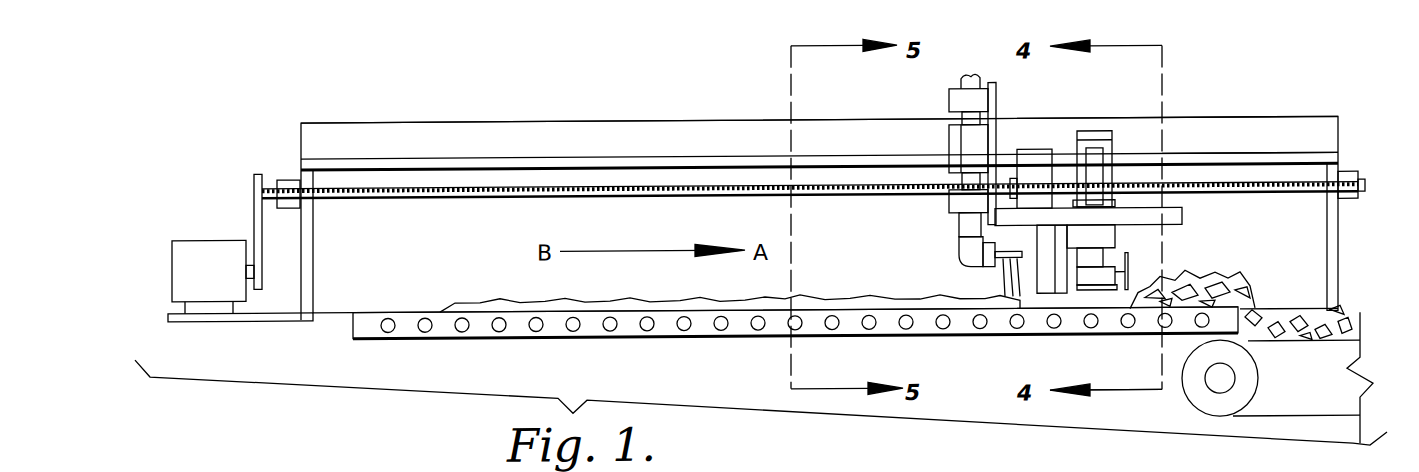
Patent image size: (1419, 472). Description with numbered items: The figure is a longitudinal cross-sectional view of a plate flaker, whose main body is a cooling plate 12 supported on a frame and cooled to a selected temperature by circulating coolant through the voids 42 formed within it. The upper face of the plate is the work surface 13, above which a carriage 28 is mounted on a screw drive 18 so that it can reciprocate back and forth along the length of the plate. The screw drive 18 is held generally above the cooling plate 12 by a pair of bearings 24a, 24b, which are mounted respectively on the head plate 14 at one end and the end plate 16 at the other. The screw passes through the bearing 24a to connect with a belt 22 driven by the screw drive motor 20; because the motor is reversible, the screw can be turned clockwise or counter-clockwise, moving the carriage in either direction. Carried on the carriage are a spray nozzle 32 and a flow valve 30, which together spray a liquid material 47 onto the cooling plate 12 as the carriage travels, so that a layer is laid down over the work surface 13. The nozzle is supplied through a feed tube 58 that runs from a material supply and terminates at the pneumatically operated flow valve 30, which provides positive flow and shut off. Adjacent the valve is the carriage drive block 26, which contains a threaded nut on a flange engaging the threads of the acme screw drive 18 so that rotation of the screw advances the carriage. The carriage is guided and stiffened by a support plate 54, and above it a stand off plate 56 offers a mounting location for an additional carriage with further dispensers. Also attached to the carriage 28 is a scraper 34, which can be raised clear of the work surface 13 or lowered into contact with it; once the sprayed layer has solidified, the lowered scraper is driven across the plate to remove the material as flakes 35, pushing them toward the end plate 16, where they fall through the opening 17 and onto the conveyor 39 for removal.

The cooling plate 12 is at (795, 345).
The work surface 13 is at (416, 310).
The head plate 14 is at (310, 323).
The end plate 16 is at (1335, 289).
The opening 17 is at (1306, 332).
The screw drive 18 is at (420, 192).
The screw drive motor 20 is at (211, 252).
The belt 22 is at (255, 226).
The bearing 24a is at (289, 192).
The bearing 24b is at (1353, 186).
The carriage drive block 26 is at (1018, 187).
The carriage 28 is at (1048, 292).
The flow valve 30 is at (970, 147).
The spray nozzle 32 is at (1003, 265).
The scraper 34 is at (1118, 294).
The flakes 35 is at (1243, 264).
The conveyor 39 is at (1208, 405).
The voids 42 is at (749, 343).
The liquid material 47 is at (801, 298).
The support plate 54 is at (1263, 162).
The stand off plate 56 is at (565, 126).
The feed tube 58 is at (962, 106).